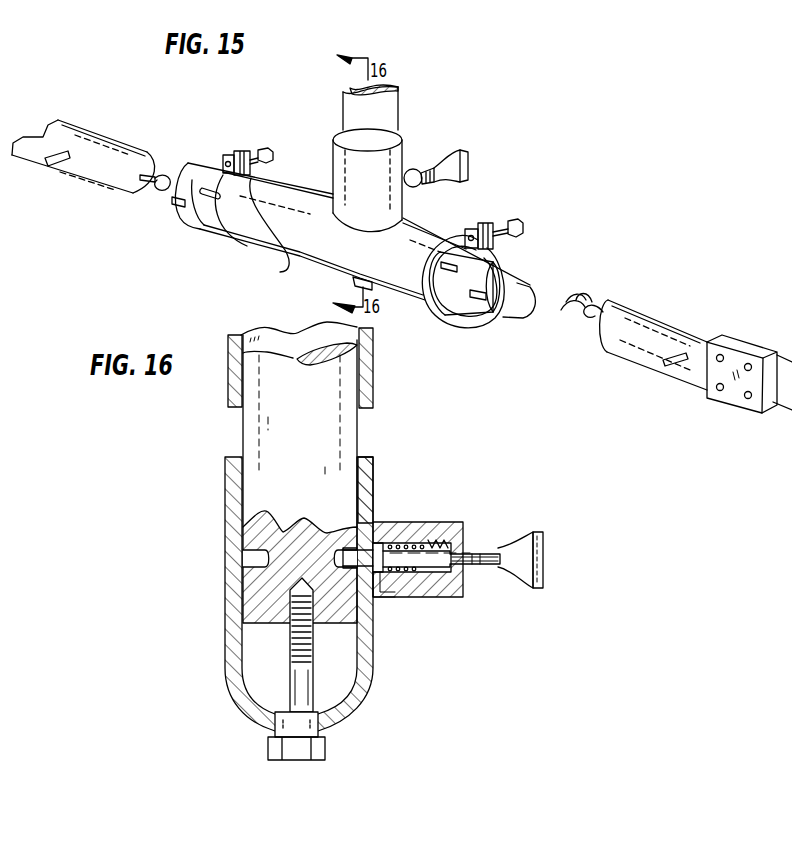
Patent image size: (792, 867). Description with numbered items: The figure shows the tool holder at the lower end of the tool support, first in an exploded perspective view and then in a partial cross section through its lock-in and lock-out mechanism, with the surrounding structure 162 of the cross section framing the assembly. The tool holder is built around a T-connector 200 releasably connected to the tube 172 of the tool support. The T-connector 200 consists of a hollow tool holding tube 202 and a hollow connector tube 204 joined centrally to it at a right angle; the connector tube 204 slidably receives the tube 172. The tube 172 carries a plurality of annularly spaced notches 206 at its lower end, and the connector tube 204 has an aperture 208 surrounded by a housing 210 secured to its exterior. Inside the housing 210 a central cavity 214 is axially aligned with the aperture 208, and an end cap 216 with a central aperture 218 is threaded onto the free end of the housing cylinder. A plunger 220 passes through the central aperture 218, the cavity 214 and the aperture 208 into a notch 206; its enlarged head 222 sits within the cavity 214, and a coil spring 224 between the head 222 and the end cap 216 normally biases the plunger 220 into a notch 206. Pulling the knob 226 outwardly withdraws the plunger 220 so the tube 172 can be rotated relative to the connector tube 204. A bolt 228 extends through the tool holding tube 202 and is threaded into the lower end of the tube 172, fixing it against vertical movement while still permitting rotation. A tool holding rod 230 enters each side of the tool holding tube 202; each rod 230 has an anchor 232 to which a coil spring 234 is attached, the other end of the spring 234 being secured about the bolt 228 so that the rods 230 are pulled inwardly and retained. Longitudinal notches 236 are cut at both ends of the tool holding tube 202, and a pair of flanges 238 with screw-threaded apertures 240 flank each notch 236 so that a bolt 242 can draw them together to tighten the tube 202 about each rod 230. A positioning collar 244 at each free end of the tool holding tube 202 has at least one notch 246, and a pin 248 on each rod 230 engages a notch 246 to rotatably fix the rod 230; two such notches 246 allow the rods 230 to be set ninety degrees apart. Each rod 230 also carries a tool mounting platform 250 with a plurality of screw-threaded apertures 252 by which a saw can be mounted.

In FIG. 16, the housing 162 is at (370, 392).
In FIG. 15, the tube 172 is at (402, 105).
In FIG. 16, the tube 172 is at (253, 433).
In FIG. 15, the T-connector 200 is at (316, 185).
In FIG. 15, the hollow tool holding tube 202 is at (265, 237).
In FIG. 15, the hollow connector tube 204 is at (398, 158).
In FIG. 16, the hollow connector tube 204 is at (368, 478).
In FIG. 16, the notches 206 is at (250, 562).
In FIG. 16, the aperture 208 is at (368, 545).
In FIG. 15, the housing 210 is at (414, 187).
In FIG. 16, the housing 210 is at (450, 516).
In FIG. 16, the central cavity 214 is at (396, 572).
In FIG. 16, the end cap 216 is at (460, 568).
In FIG. 16, the central aperture 218 is at (465, 555).
In FIG. 15, the plunger 220 is at (434, 180).
In FIG. 16, the plunger 220 is at (445, 580).
In FIG. 16, the enlarged head 222 is at (378, 545).
In FIG. 16, the coil spring 224 is at (380, 575).
In FIG. 15, the knob 226 is at (462, 155).
In FIG. 16, the knob 226 is at (542, 545).
In FIG. 15, the bolt 228 is at (355, 281).
In FIG. 16, the bolt 228 is at (270, 742).
In FIG. 15, the tool holding rod 230 is at (123, 148).
In FIG. 15, the anchor 232 is at (150, 183).
In FIG. 15, the coil spring 234 is at (170, 168).
In FIG. 15, the longitudinal notches 236 is at (290, 253).
In FIG. 15, the flanges 238 is at (245, 150).
In FIG. 15, the screw-threaded apertures 240 is at (226, 164).
In FIG. 15, the bolt 242 is at (268, 148).
In FIG. 15, the positioning collar 244 is at (207, 224).
In FIG. 15, the notch 246 is at (176, 204).
In FIG. 15, the pin 248 is at (62, 168).
In FIG. 15, the tool mounting platform 250 is at (730, 362).
In FIG. 15, the screw-threaded apertures 252 is at (748, 399).